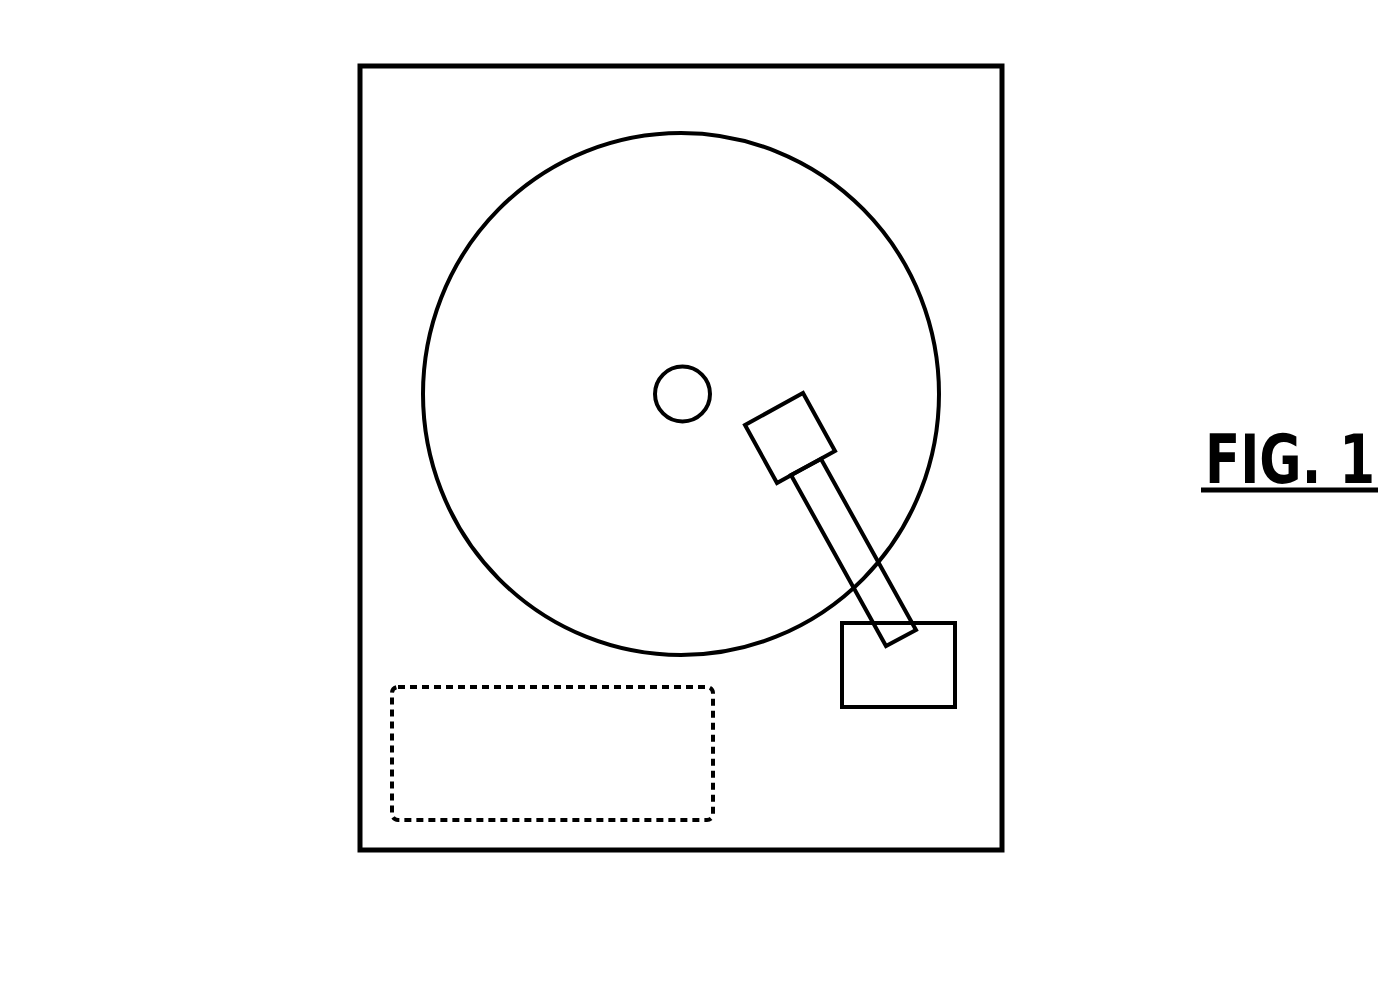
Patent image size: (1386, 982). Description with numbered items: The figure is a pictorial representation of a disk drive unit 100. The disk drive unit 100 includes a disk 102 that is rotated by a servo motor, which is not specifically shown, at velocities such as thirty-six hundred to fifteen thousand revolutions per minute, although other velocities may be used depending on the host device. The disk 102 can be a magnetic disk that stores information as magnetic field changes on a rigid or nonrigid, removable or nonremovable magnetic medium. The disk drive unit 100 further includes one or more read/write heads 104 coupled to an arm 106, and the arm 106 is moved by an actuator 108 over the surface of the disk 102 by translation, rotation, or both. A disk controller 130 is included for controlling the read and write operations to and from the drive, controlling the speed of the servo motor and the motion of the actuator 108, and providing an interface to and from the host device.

The disk drive unit 100 is at (280, 500).
The disk 102 is at (517, 191).
The read/write head 104 is at (862, 437).
The arm 106 is at (857, 530).
The actuator 108 is at (842, 683).
The disk controller 130 is at (552, 753).